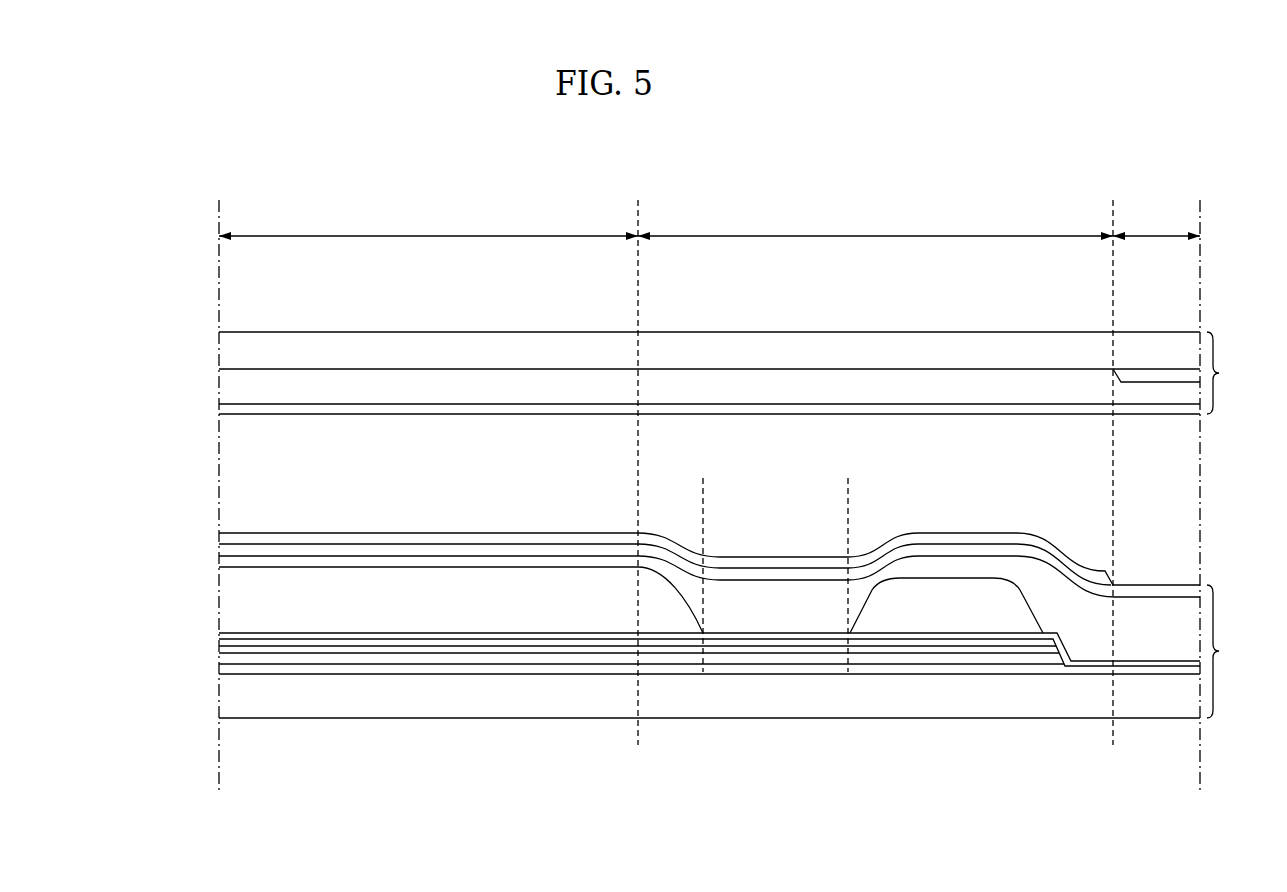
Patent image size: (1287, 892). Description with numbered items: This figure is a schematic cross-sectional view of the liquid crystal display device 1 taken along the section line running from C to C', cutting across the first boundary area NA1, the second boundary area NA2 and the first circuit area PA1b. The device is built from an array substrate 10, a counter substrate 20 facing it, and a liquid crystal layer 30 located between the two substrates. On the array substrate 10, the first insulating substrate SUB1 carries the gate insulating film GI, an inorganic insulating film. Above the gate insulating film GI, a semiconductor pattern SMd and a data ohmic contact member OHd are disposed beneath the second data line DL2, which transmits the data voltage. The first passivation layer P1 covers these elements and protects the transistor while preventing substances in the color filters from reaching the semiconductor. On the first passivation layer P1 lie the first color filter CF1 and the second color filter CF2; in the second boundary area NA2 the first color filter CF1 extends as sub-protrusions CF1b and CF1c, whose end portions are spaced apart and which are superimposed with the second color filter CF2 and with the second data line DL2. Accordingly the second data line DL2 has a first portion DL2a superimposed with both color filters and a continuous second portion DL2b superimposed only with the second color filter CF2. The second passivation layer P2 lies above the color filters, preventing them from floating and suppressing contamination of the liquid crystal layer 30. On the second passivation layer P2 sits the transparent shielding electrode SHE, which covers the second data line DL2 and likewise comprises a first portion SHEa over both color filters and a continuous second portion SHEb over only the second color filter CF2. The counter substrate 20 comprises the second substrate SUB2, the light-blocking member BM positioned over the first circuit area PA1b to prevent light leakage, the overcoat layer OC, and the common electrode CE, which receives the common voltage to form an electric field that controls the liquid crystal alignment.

The liquid crystal display device 1 is at (444, 153).
The array substrate 10 is at (1225, 651).
The counter substrate 20 is at (1225, 373).
The liquid crystal layer 30 is at (1193, 505).
The first insulating substrate SUB1 is at (223, 697).
The second substrate SUB2 is at (224, 350).
The gate insulating film GI is at (223, 669).
The semiconductor pattern SMd is at (223, 658).
The data ohmic contact member OHd is at (223, 649).
The second data line DL2 is at (223, 642).
The first portion of second data line DL2a is at (671, 643).
The second portion of second data line DL2b is at (797, 643).
The first passivation layer P1 is at (223, 636).
The second passivation layer P2 is at (224, 550).
The first color filter CF1 is at (372, 620).
The first sub-protrusion CF1b is at (682, 608).
The first sub-protrusion CF1c is at (947, 590).
The second color filter CF2 is at (480, 560).
The shielding electrode SHE is at (224, 538).
The first portion of shielding electrode SHEa is at (666, 543).
The second portion of shielding electrode SHEb is at (766, 562).
The common electrode CE is at (224, 409).
The overcoat layer OC is at (224, 380).
The light-blocking member BM is at (1173, 377).
The first boundary area NA1 is at (428, 472).
The second boundary area NA2 is at (875, 472).
The first circuit area PA1b is at (1156, 224).
The section line C is at (218, 505).
The section line C' is at (1198, 505).